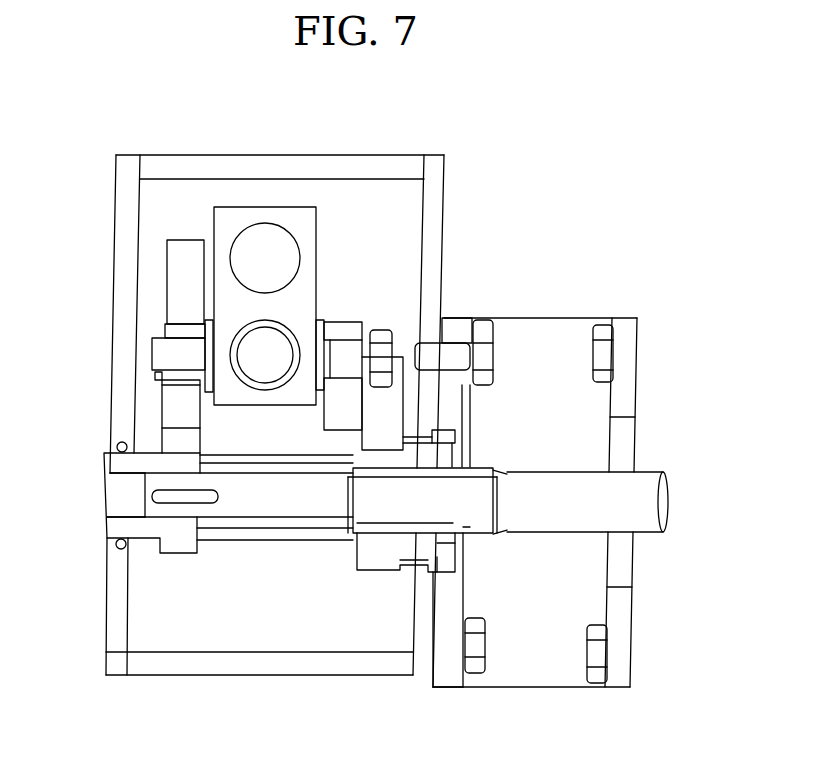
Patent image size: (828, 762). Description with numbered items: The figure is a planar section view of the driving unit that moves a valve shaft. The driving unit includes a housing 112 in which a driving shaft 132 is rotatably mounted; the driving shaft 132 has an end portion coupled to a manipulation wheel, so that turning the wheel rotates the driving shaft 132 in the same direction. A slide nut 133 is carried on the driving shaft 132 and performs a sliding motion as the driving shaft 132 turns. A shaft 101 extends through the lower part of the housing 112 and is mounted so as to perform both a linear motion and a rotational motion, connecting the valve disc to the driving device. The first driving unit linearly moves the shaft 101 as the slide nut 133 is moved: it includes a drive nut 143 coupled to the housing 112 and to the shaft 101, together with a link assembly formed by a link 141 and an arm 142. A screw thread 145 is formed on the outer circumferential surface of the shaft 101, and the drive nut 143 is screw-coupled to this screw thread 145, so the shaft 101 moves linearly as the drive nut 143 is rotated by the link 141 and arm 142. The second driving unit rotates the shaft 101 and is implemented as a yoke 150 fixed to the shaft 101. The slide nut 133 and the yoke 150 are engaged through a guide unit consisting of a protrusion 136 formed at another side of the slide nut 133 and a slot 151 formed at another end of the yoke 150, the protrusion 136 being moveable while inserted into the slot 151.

The shaft 101 is at (640, 478).
The housing 112 is at (433, 172).
The driving shaft 132 is at (262, 353).
The slide nut 133 is at (225, 215).
The protrusion 136 is at (175, 362).
The link 141 is at (340, 332).
The arm 142 is at (387, 425).
The drive nut 143 is at (432, 455).
The screw thread 145 is at (469, 527).
The yoke 150 is at (178, 277).
The slot 151 is at (182, 428).